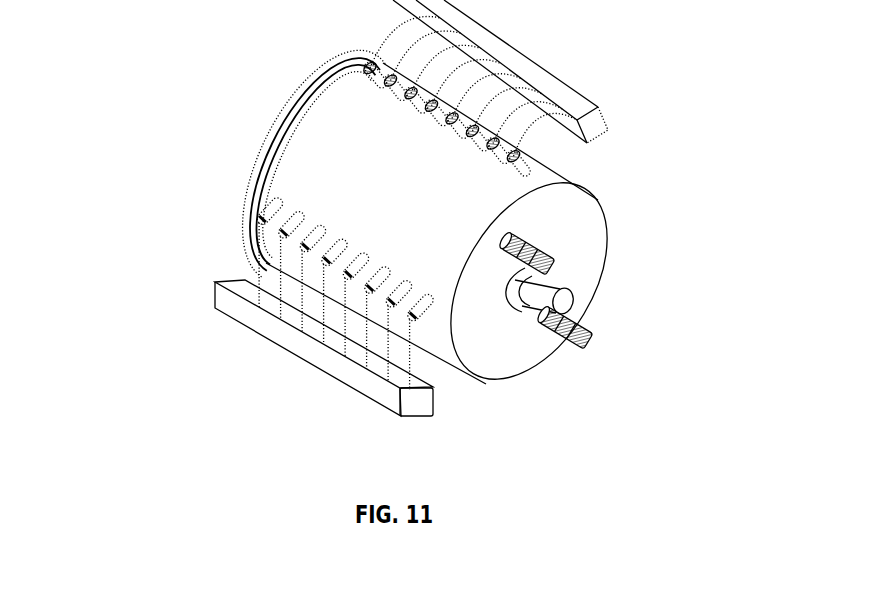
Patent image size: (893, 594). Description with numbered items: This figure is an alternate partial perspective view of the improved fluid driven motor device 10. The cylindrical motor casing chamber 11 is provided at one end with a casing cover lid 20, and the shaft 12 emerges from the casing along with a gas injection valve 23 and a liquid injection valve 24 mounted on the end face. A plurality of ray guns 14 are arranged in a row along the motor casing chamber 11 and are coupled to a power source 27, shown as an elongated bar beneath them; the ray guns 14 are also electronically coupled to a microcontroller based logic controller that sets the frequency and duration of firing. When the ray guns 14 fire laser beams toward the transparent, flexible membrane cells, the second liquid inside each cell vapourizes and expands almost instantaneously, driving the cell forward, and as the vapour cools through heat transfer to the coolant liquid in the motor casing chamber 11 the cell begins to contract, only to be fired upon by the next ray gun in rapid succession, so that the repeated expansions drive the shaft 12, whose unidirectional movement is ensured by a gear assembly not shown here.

The improved fluid driven motor device 10 is at (555, 32).
The motor casing chamber 11 is at (450, 230).
The shaft 12 is at (570, 290).
The ray guns 14 is at (254, 212).
The casing cover lid 20 is at (272, 120).
The gas injection valve 23 is at (553, 262).
The liquid injection valve 24 is at (592, 332).
The power source 27 is at (274, 325).